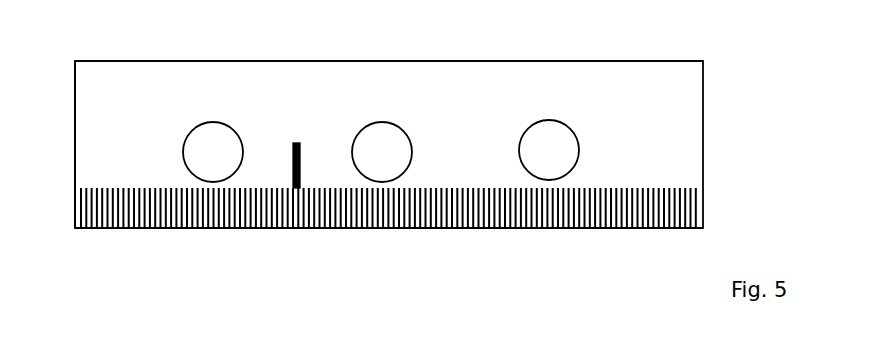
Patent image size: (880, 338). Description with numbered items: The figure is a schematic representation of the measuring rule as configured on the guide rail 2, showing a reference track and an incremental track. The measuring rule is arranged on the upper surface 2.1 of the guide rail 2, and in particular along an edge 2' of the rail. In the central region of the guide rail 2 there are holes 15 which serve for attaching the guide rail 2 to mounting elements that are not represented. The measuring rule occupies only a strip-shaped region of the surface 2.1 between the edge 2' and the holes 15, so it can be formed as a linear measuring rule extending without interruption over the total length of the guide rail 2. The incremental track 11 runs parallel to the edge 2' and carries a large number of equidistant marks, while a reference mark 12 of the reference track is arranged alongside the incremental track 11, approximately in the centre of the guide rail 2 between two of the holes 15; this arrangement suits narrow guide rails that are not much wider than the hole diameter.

The guide rail 2 is at (411, 118).
The edge of the guide rail 2' is at (54, 145).
The upper surface of the guide rail 2.1 is at (597, 75).
The incremental track 11 is at (705, 199).
The reference mark 12 is at (292, 155).
The holes 15 is at (202, 122).